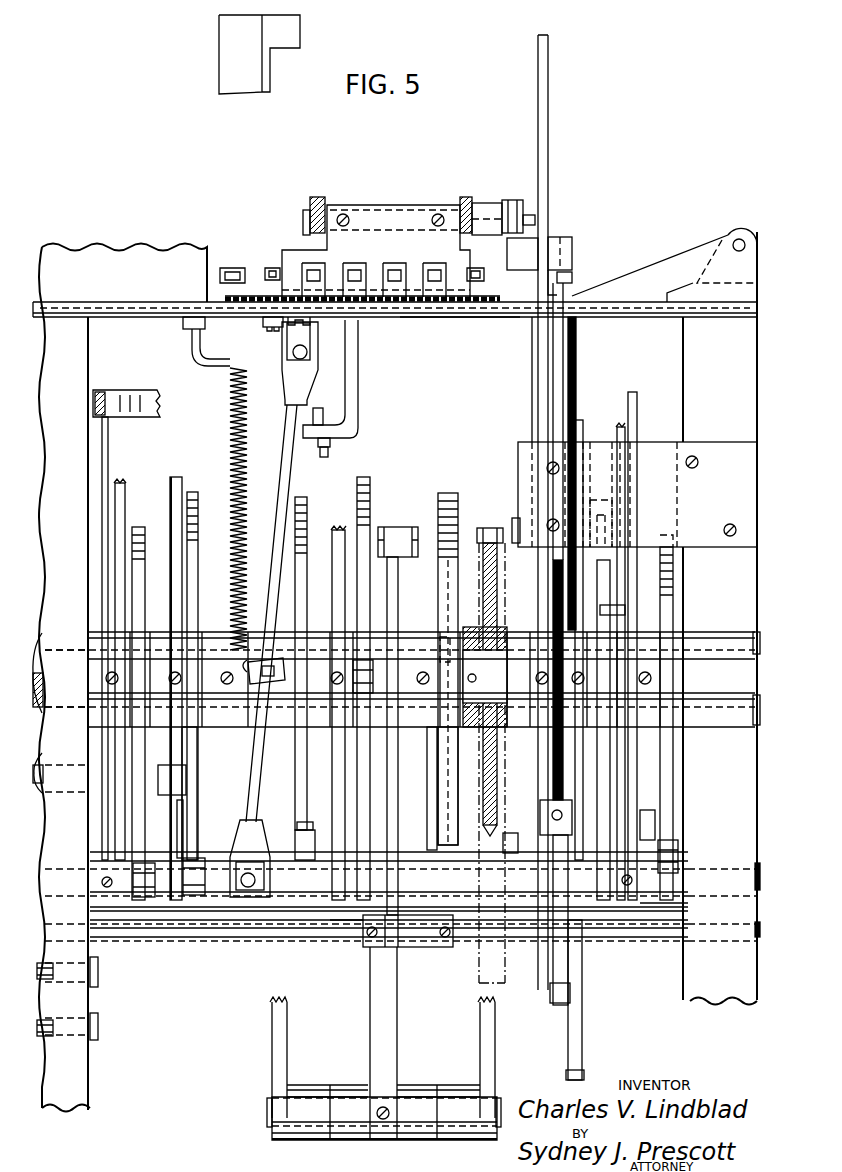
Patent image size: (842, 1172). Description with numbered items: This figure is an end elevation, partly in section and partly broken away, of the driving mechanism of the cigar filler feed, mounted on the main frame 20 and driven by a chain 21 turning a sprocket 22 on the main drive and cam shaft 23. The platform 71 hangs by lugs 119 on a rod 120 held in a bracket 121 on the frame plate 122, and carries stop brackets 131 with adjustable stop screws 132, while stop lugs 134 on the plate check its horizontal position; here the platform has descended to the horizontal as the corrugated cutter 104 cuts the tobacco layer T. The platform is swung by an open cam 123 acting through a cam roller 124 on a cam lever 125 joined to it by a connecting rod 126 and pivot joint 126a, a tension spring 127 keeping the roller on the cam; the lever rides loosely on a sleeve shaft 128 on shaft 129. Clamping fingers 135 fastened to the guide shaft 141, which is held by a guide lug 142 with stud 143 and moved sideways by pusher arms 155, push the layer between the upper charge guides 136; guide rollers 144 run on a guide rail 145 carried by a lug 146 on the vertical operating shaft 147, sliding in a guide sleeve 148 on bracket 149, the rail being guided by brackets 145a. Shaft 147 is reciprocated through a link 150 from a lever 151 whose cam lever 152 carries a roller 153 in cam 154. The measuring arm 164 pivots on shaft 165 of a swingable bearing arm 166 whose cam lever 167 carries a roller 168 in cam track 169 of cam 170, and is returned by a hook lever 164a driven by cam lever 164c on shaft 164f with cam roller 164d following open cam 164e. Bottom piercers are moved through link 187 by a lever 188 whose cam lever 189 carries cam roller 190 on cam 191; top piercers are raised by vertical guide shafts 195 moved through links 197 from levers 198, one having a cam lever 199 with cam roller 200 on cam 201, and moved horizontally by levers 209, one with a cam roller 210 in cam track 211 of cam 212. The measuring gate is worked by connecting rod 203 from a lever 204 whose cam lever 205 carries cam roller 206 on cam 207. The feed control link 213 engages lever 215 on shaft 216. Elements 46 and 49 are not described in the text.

The corrugated cutter 104 is at (220, 57).
The main frame 20 is at (129, 243).
The frame plate 122 is at (173, 315).
The platform 71 is at (463, 317).
The bracket 121 is at (758, 280).
The rod 120 is at (746, 246).
The lugs 119 is at (680, 258).
The clamping fingers 135 is at (283, 250).
The guide shaft 141 is at (304, 218).
The pusher arms 155 is at (317, 197).
The guide lug 142 is at (483, 203).
The guide rollers 144 is at (509, 202).
The stud 143 is at (535, 218).
The guide rail 145 is at (507, 248).
The lug 146 is at (568, 253).
The vertical operating shaft 147 is at (573, 273).
The guide sleeve 148 is at (576, 345).
The brackets 145a is at (549, 116).
The upper charge guides 136 is at (246, 264).
The tobacco layer T is at (478, 298).
The stop lugs 134 is at (262, 319).
The pivot joint 126a is at (310, 323).
The connecting rod 126 is at (280, 353).
The tension spring 127 is at (241, 412).
The stop brackets 131 is at (358, 351).
The adjustable stop screws 132 is at (333, 449).
The link 213 is at (150, 386).
The lever 215 is at (108, 434).
The levers 209 is at (130, 475).
The vertical guide shafts 195 is at (175, 477).
The open cam 123 is at (197, 492).
The cam 201 is at (138, 528).
The cam 191 is at (299, 497).
The link 187 is at (343, 521).
The open cam 164e is at (373, 469).
The hook lever 164a is at (393, 527).
The cam lever 164c is at (388, 585).
The cam roller 164d is at (373, 668).
The roller 168 is at (446, 660).
The cam 170 is at (455, 487).
The sprocket 22 is at (487, 528).
The chain 21 is at (483, 537).
The cam 154 is at (513, 523).
The roller 153 is at (530, 683).
The cam lever 152 is at (490, 826).
The bracket 149 is at (517, 442).
The cam track 211 is at (608, 503).
The connecting rod 203 is at (646, 390).
The cam 207 is at (672, 565).
The cam roller 210 is at (612, 665).
The cam 212 is at (611, 758).
The main drive and cam shaft 23 is at (45, 640).
The links 197 is at (197, 743).
The shaft 216 is at (50, 752).
The levers 198 is at (186, 798).
The cam lever 189 is at (320, 860).
The cam roller 190 is at (300, 830).
The cam track 169 is at (438, 753).
The cam lever 167 is at (427, 777).
The cam lever 125 is at (222, 890).
The cam roller 124 is at (182, 907).
The cam roller 200 is at (140, 900).
The cam lever 199 is at (165, 910).
The lever 188 is at (348, 930).
The shaft 129 is at (118, 897).
The sleeve shaft 128 is at (183, 912).
The shaft 164f is at (761, 923).
The lever 151 is at (552, 958).
The link 150 is at (560, 1004).
The measuring arm 164 is at (272, 1036).
The swingable bearing arm 166 is at (397, 1053).
The shaft 165 is at (270, 1112).
The stud 46 is at (46, 980).
The stud 49 is at (48, 1038).
The cam roller 206 is at (679, 877).
The cam lever 205 is at (655, 903).
The lever 204 is at (656, 833).